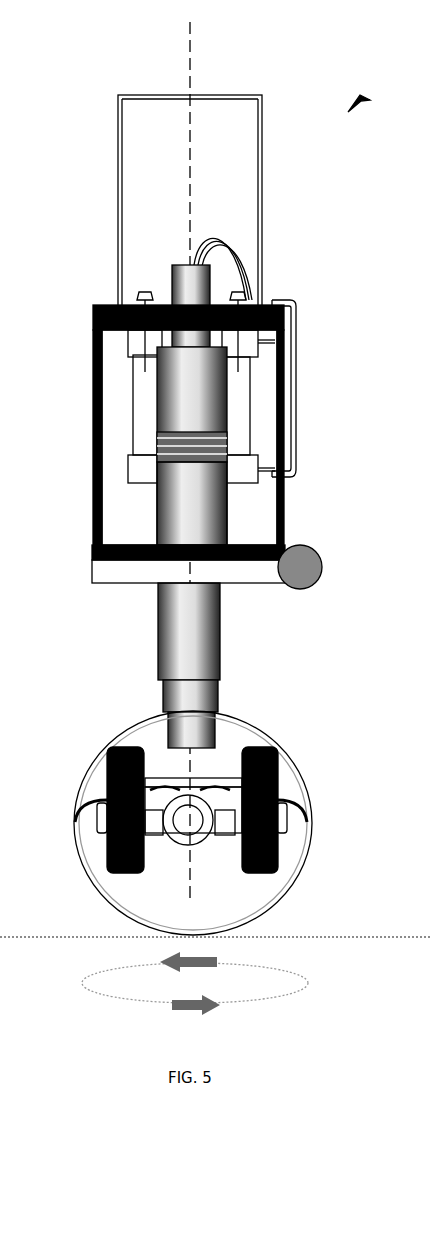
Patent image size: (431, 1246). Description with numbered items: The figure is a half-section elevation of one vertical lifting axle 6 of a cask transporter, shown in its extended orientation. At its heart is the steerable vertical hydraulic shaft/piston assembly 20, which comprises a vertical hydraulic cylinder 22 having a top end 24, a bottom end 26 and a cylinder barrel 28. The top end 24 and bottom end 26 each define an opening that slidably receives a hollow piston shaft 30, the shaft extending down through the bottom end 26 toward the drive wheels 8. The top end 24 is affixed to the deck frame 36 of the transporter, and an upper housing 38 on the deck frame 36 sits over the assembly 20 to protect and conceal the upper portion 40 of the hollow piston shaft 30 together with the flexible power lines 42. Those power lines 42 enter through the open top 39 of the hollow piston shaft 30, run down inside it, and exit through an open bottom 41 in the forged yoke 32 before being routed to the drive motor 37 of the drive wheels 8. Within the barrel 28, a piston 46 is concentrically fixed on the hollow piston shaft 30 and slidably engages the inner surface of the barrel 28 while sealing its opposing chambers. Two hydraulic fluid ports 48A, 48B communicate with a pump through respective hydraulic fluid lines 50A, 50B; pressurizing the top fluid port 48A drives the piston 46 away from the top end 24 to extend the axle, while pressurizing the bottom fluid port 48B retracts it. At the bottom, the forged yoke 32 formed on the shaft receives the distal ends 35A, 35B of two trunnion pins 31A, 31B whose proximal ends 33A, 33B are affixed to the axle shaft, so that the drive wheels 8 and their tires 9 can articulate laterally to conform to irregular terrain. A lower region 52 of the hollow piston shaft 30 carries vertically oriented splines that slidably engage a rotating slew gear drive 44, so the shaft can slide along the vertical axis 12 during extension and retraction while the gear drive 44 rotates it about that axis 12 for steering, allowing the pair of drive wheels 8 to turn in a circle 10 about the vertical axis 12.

The vertical lifting axle 6 is at (365, 102).
The drive wheels 8 is at (308, 798).
The tires 9 is at (232, 823).
The circle 10 is at (318, 993).
The vertical axis 12 is at (235, 455).
The vertical hydraulic shaft/piston assembly 20 is at (312, 360).
The vertical hydraulic cylinder 22 is at (272, 430).
The top end 24 is at (233, 376).
The bottom end 26 is at (254, 503).
The cylinder barrel 28 is at (87, 402).
The hollow piston shaft 30 is at (258, 490).
The trunnion pin 31A is at (105, 860).
The trunnion pin 31B is at (276, 860).
The forged yoke 32 is at (241, 775).
The proximal end 33A is at (122, 886).
The proximal end 33B is at (252, 886).
The distal end 35A is at (81, 810).
The distal end 35B is at (305, 810).
The deck frame 36 is at (150, 406).
The drive motor 37 is at (156, 917).
The upper housing 38 is at (213, 184).
The open top 39 is at (131, 236).
The upper portion 40 is at (140, 235).
The open bottom 41 is at (191, 755).
The flexible power lines 42 is at (243, 229).
The rotating slew gear drive 44 is at (216, 577).
The piston 46 is at (249, 428).
The top fluid port 48A is at (299, 372).
The bottom fluid port 48B is at (286, 482).
The hydraulic fluid line 50A is at (308, 330).
The hydraulic fluid line 50B is at (307, 467).
The lower region 52 is at (233, 602).